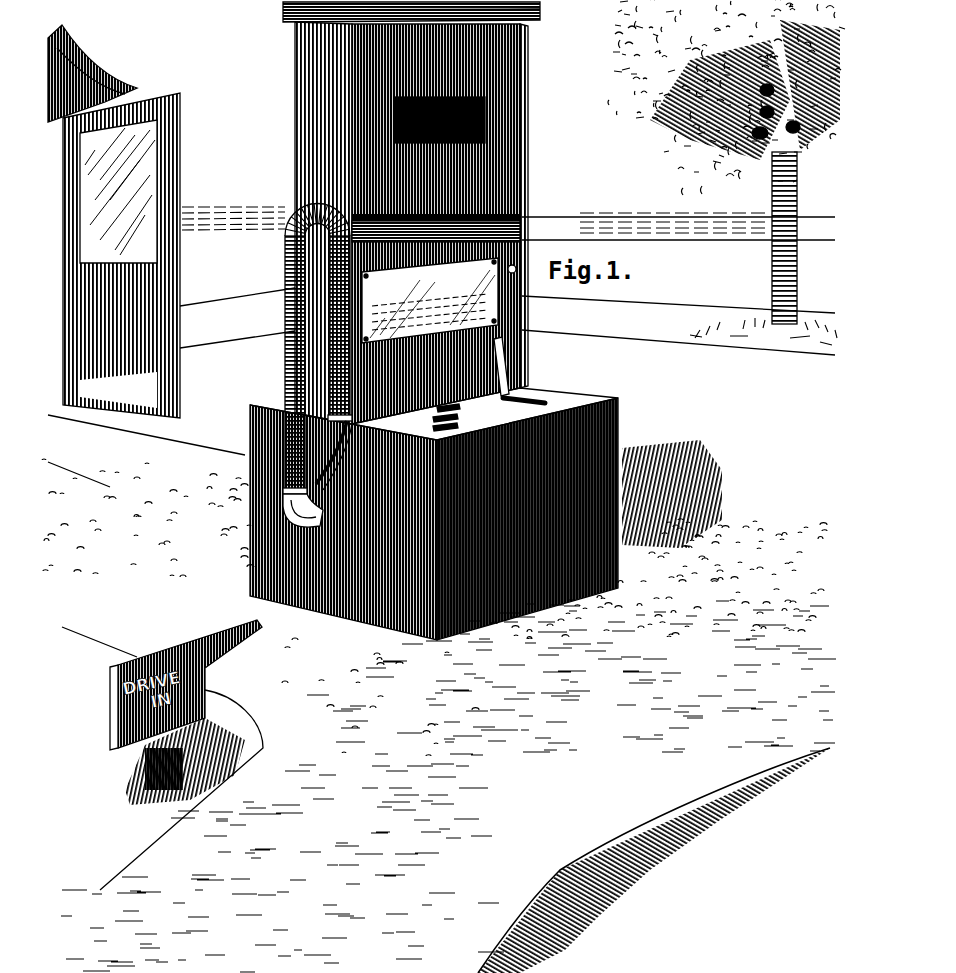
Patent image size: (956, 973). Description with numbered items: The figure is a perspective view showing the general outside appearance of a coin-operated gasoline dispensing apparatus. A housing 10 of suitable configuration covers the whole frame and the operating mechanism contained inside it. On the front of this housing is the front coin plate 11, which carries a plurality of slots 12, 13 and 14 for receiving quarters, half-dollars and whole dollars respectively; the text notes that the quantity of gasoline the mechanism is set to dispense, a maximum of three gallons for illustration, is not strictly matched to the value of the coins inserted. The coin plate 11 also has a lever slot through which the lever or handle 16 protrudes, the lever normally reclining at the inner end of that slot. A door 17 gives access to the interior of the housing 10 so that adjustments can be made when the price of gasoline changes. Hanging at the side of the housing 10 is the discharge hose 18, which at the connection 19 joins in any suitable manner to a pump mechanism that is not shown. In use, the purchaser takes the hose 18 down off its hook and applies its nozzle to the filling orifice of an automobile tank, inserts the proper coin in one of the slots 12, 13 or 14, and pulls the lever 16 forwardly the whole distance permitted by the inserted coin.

The housing 10 is at (421, 213).
The front coin plate 11 is at (567, 398).
The slot 12 is at (461, 408).
The slot 13 is at (432, 420).
The slot 14 is at (459, 426).
The lever 16 is at (512, 347).
The door 17 is at (514, 247).
The discharge hose 18 is at (285, 352).
The hose connection 19 is at (293, 508).